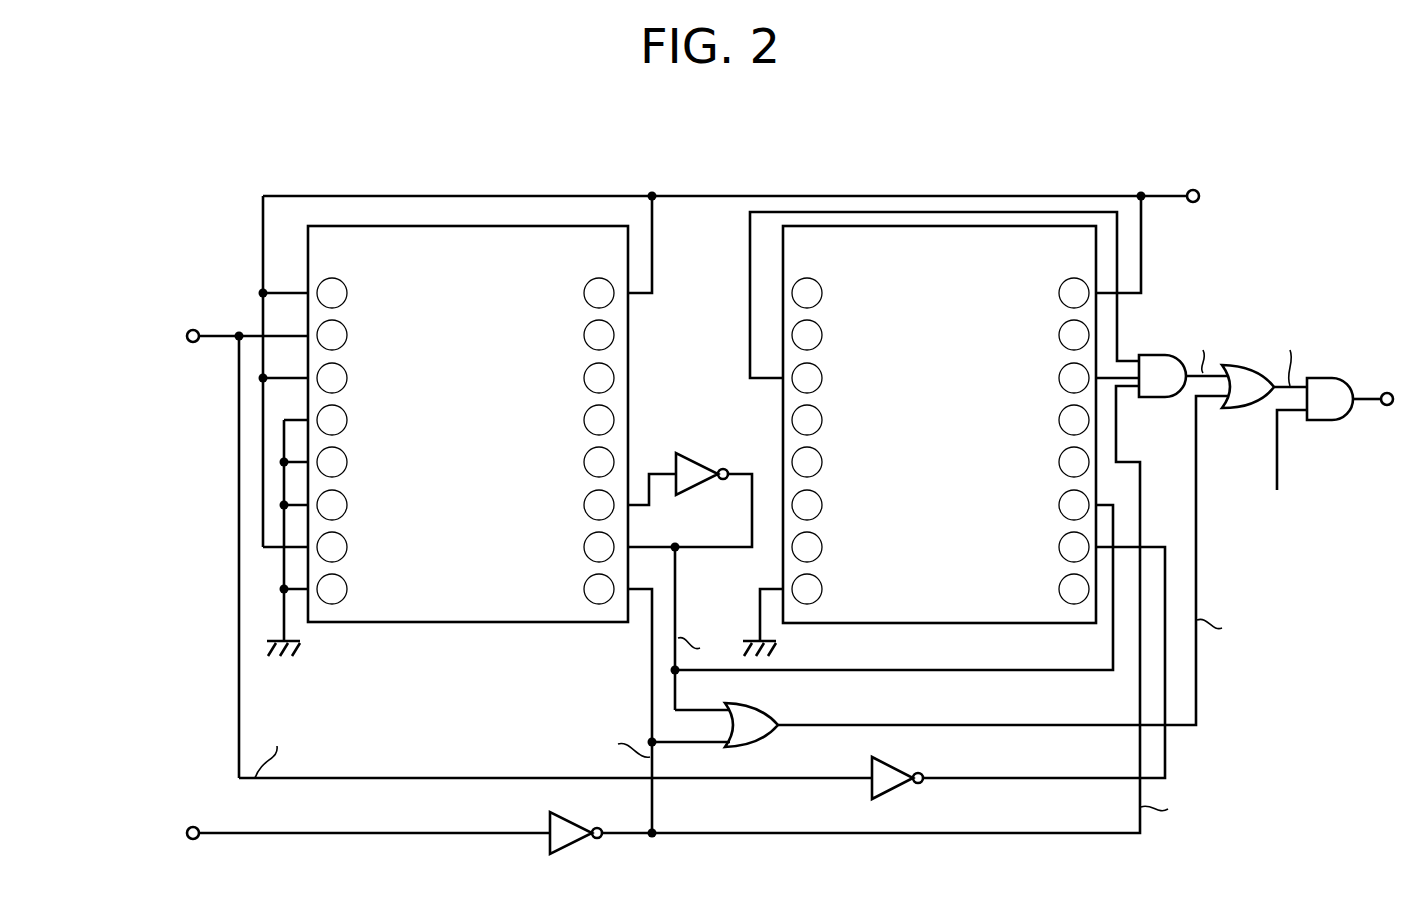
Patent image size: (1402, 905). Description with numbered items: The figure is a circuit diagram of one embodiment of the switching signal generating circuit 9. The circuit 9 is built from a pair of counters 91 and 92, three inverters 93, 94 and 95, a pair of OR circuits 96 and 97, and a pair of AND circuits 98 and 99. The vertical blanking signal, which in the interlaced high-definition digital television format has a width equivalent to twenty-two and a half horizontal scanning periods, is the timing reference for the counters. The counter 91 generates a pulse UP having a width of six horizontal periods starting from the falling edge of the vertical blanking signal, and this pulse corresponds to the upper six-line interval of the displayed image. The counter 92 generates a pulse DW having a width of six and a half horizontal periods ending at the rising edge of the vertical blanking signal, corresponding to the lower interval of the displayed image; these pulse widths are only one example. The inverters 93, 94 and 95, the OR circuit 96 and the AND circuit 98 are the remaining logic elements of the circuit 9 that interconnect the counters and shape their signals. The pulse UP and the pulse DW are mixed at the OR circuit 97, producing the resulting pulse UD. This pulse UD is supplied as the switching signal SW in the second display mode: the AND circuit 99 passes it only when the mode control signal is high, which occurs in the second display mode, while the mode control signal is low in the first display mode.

The switching signal generating circuit 9 is at (933, 171).
The counter 91 is at (466, 623).
The counter 92 is at (915, 623).
The inverter 93 is at (570, 845).
The inverter 94 is at (893, 760).
The inverter 95 is at (697, 450).
The OR circuit 96 is at (772, 700).
The OR circuit 97 is at (1250, 365).
The AND circuit 98 is at (1168, 353).
The AND circuit 99 is at (1340, 378).